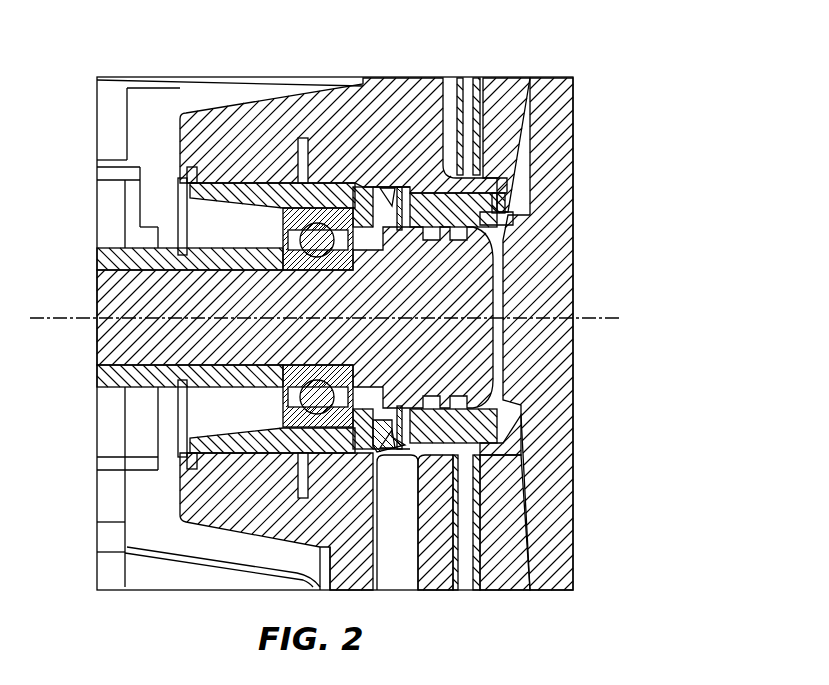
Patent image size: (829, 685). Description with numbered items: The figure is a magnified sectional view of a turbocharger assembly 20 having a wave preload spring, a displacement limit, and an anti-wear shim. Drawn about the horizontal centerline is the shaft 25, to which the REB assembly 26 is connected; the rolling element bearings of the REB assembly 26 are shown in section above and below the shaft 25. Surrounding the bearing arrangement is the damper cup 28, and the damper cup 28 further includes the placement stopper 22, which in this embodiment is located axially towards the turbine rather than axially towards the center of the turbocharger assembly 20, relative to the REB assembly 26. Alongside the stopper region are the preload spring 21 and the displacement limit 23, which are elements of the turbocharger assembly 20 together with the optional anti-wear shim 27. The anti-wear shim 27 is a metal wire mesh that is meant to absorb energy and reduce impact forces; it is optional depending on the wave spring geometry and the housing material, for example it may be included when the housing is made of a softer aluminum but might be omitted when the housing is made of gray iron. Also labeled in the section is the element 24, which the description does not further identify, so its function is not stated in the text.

The turbocharger assembly 20 is at (616, 81).
The preload spring 21 is at (399, 186).
The placement stopper 22 is at (364, 186).
The displacement limit 23 is at (462, 446).
The retainer 24 is at (485, 226).
The shaft 25 is at (112, 299).
The REB assembly 26 is at (282, 224).
The anti-wear shim 27 is at (441, 78).
The damper cup 28 is at (291, 185).